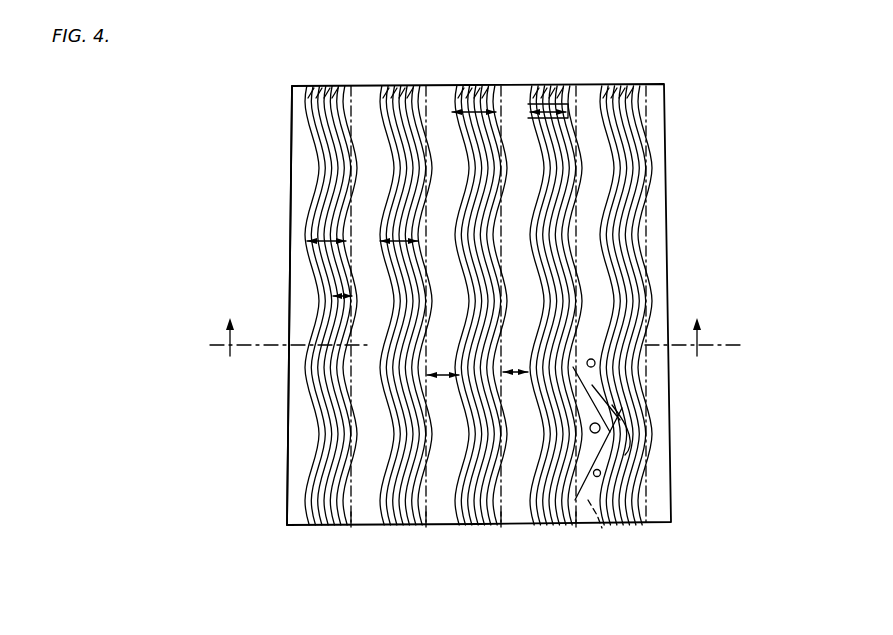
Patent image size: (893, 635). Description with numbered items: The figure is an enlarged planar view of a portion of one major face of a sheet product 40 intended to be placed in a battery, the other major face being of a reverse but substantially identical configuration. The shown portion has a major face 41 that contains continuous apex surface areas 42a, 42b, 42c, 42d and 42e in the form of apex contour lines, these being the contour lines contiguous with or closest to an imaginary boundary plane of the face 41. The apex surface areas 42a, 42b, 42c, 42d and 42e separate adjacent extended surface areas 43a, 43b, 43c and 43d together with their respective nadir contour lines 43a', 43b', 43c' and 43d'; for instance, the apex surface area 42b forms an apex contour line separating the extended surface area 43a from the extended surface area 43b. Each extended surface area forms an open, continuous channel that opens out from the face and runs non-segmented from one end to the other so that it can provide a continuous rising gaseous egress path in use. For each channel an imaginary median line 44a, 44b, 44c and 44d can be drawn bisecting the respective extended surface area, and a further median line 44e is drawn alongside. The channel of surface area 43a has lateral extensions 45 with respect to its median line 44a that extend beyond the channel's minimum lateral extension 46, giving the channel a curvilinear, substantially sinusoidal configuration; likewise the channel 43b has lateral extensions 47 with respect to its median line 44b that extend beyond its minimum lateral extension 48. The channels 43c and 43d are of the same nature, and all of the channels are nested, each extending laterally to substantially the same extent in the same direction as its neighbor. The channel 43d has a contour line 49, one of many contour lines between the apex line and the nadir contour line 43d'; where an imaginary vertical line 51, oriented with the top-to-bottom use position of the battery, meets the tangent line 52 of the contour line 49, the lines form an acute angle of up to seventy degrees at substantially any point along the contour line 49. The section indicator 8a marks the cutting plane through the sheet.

The sheet product 40 is at (286, 228).
The major face 41 is at (300, 460).
The apex surface area 42a is at (303, 88).
The apex surface area 42b is at (418, 74).
The apex surface area 42c is at (486, 88).
The apex surface area 42d is at (550, 86).
The apex surface area 42e is at (622, 84).
The extended surface area 43a is at (354, 289).
The extended surface area 43b is at (430, 279).
The extended surface area 43c is at (516, 264).
The extended surface area 43d is at (589, 290).
The nadir contour line 43a' is at (349, 555).
The nadir contour line 43b' is at (429, 560).
The nadir contour line 43c' is at (514, 560).
The nadir contour line 43d' is at (593, 560).
The imaginary median line 44a is at (322, 82).
The imaginary median line 44b is at (452, 84).
The imaginary median line 44c is at (508, 84).
The imaginary median line 44d is at (535, 84).
The flat band between strips 44e is at (662, 88).
The lateral extensions 45 is at (345, 248).
The minimum lateral extension 46 is at (383, 288).
The lateral extensions 47 is at (418, 246).
The minimum lateral extension 48 is at (515, 360).
The contour line 49 is at (603, 530).
The imaginary line 51 is at (605, 389).
The tangent line 52 is at (622, 425).
The section line 8a is at (465, 337).